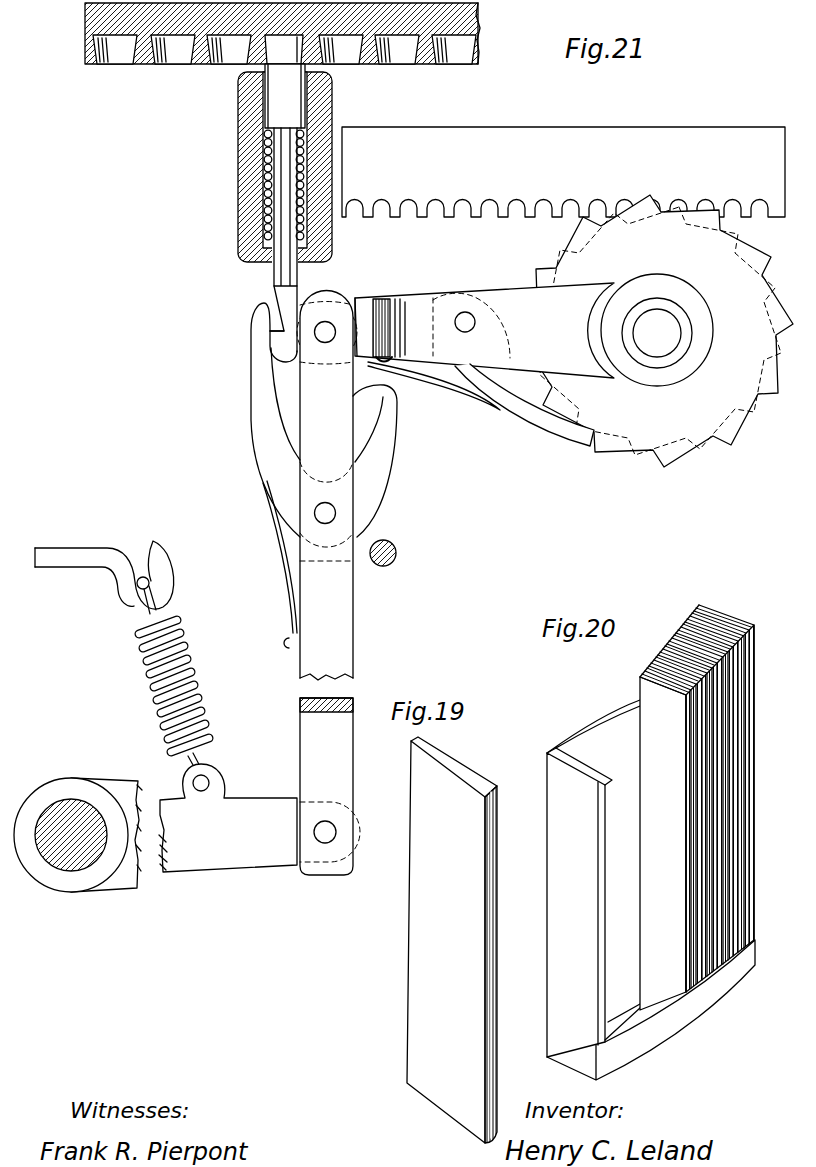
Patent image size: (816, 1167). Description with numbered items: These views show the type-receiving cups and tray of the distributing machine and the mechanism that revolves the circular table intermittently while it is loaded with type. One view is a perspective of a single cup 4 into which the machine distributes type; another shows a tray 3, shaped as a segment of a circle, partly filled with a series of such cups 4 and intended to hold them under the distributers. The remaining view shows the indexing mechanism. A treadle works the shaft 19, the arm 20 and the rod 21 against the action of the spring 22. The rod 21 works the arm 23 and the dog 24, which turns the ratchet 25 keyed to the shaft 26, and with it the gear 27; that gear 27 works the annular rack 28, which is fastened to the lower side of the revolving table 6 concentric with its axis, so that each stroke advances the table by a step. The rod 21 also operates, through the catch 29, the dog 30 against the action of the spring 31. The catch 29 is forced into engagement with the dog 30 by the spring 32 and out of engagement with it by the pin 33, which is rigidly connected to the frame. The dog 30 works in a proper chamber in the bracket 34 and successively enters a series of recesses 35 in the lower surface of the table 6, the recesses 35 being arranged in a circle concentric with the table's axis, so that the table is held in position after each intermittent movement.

In FIG. 20, the tray 3 is at (651, 890).
In FIG. 19, the cup 4 is at (452, 940).
In FIG. 20, the cup 4 is at (697, 807).
In FIG. 21, the circular table 6 is at (287, 33).
In FIG. 21, the shaft 19 is at (72, 850).
In FIG. 21, the arm 20 is at (228, 818).
In FIG. 21, the rod 21 is at (330, 583).
In FIG. 21, the spring 22 is at (124, 668).
In FIG. 21, the arm 23 is at (455, 330).
In FIG. 21, the dog 24 is at (481, 404).
In FIG. 21, the ratchet 25 is at (657, 341).
In FIG. 21, the shaft 26 is at (657, 333).
In FIG. 21, the gear 27 is at (730, 238).
In FIG. 21, the annular rack 28 is at (563, 172).
In FIG. 21, the catch 29 is at (324, 420).
In FIG. 21, the dog 30 is at (285, 193).
In FIG. 21, the spring 31 is at (262, 163).
In FIG. 21, the spring 32 is at (277, 564).
In FIG. 21, the pin 33 is at (383, 565).
In FIG. 21, the bracket 34 is at (298, 167).
In FIG. 21, the recess 35 is at (284, 49).